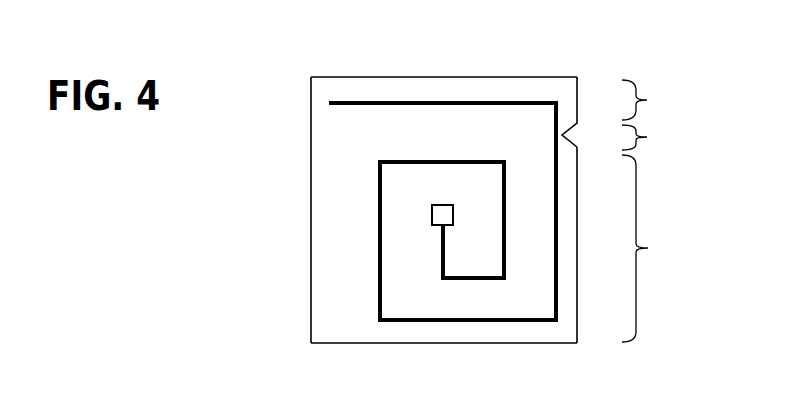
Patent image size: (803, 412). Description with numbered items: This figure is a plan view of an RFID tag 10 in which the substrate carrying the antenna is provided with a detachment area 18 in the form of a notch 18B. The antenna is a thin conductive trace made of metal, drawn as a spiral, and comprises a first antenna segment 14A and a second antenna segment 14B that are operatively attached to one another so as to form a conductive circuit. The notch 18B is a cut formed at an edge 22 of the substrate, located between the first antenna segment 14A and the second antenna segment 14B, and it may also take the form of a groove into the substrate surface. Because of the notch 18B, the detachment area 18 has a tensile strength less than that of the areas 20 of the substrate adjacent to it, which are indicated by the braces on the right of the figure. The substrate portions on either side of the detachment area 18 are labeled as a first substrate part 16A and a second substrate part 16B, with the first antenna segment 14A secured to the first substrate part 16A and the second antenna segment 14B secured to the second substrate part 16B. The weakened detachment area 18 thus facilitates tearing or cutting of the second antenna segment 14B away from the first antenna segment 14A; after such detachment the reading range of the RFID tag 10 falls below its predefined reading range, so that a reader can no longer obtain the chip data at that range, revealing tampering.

The RFID tag 10 is at (665, 37).
The first antenna segment 14A is at (380, 211).
The second antenna segment 14B is at (405, 103).
The first substrate part 16A is at (560, 345).
The second substrate part 16B is at (560, 77).
The detachment area 18 is at (656, 138).
The notch 18B is at (577, 133).
The areas of substrate 20 is at (656, 211).
The edge of substrate 22 is at (578, 215).